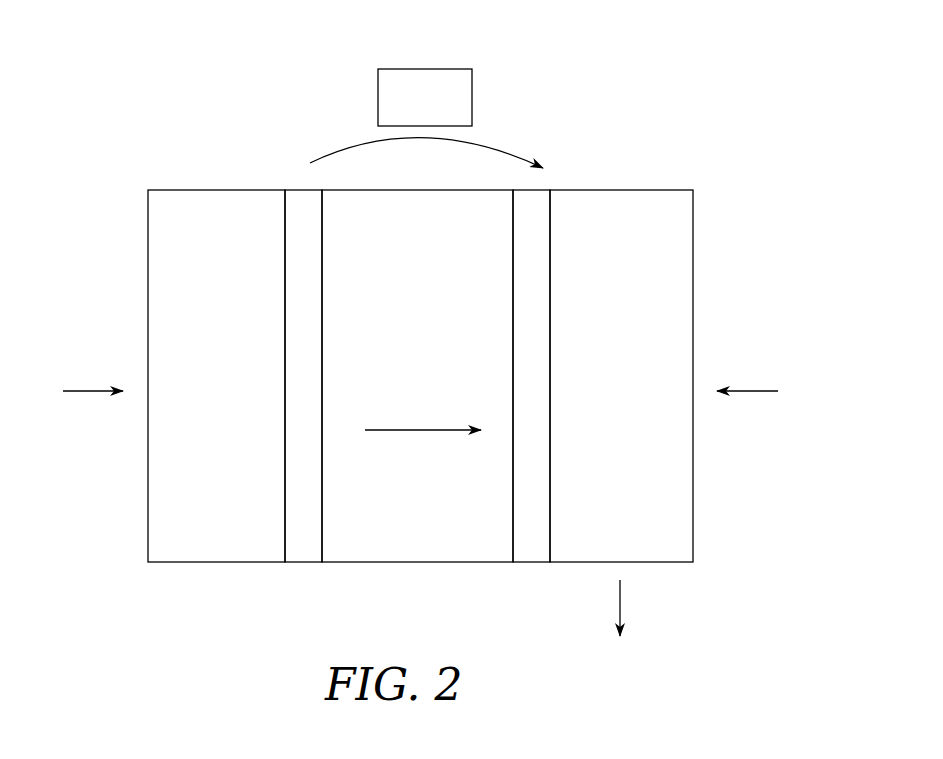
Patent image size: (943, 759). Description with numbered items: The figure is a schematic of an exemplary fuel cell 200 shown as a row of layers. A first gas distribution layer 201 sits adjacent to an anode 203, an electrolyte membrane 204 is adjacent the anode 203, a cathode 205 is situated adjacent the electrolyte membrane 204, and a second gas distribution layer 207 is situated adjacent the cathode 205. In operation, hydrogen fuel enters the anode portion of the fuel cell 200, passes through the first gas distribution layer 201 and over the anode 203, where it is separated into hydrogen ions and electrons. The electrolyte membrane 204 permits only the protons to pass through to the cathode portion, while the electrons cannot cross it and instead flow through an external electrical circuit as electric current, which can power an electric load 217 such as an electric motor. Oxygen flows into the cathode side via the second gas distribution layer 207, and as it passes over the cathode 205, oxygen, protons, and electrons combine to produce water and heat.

The fuel cell 200 is at (706, 81).
The first gas distribution layer 201 is at (244, 544).
The anode 203 is at (302, 563).
The electrolyte membrane 204 is at (446, 544).
The cathode 205 is at (529, 563).
The second gas distribution layer 207 is at (649, 544).
The electric load 217 is at (425, 69).